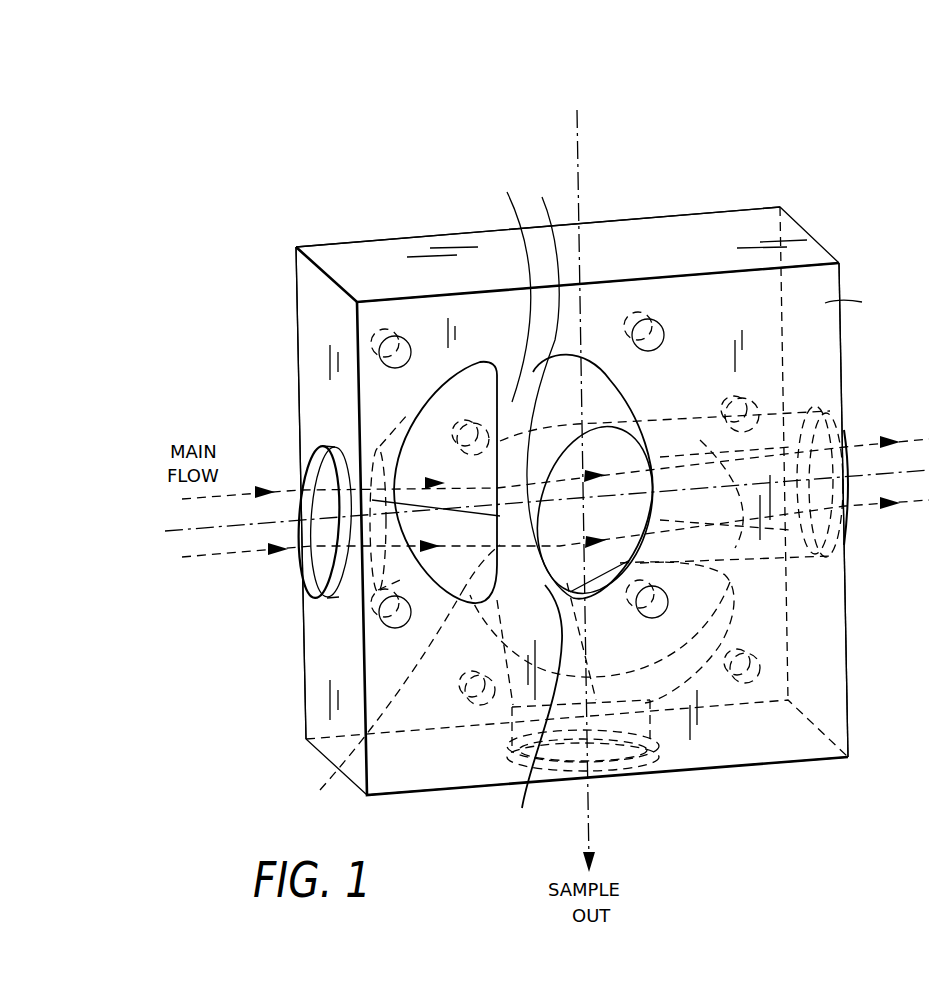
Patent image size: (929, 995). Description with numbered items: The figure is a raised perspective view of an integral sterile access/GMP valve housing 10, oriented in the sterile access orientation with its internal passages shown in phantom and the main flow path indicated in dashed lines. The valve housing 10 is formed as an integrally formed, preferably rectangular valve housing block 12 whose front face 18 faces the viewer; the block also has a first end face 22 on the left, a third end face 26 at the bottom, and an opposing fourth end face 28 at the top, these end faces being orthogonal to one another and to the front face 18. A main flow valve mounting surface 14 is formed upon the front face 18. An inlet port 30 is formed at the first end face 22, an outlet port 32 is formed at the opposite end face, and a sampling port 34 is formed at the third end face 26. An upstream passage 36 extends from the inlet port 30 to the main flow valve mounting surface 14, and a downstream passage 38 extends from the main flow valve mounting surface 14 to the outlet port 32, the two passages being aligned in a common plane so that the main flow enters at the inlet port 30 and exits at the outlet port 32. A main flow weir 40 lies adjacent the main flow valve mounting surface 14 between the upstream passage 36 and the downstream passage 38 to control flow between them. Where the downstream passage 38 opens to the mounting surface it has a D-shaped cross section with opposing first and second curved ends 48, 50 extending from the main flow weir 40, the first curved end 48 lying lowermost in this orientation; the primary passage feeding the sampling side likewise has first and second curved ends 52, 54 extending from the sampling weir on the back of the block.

The integral sterile access/GMP valve housing 10 is at (315, 182).
The valve housing block 12 is at (312, 300).
The main flow valve mounting surface 14 is at (504, 324).
The front face 18 is at (869, 510).
The first end face 22 is at (312, 670).
The third end face 26 is at (418, 805).
The fourth end face 28 is at (330, 247).
The inlet port 30 is at (318, 455).
The outlet port 32 is at (847, 458).
The sampling port 34 is at (622, 790).
The upstream passage 36 is at (425, 438).
The downstream passage 38 is at (594, 392).
The main flow weir 40 is at (504, 287).
The first curved end 48 is at (546, 711).
The second curved end 50 is at (550, 385).
The first curved end 52 is at (392, 678).
The second curved end 54 is at (760, 552).